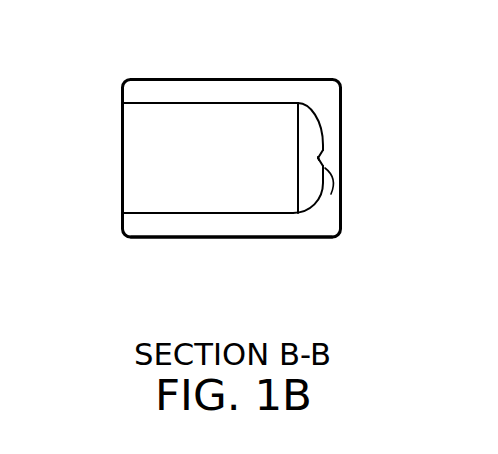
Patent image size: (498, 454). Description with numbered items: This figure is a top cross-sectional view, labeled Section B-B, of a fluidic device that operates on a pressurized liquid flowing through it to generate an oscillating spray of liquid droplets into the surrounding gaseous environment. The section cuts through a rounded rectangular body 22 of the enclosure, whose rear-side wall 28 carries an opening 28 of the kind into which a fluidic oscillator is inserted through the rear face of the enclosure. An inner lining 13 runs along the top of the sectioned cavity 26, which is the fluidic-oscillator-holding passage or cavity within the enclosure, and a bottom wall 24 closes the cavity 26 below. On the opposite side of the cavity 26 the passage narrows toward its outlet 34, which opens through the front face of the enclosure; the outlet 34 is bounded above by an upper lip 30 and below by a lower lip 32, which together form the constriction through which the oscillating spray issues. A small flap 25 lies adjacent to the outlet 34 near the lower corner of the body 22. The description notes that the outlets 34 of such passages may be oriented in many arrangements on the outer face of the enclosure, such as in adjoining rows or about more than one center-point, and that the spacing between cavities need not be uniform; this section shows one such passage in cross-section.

The housing 22 is at (336, 79).
The top layer 13 is at (144, 103).
The opening 28 is at (122, 176).
The inner cavity 26 is at (239, 193).
The upper pinch lip 30 is at (322, 154).
The outlet 34 is at (322, 158).
The lower pinch lip 32 is at (323, 166).
The flap 25 is at (332, 198).
The bottom wall 24 is at (268, 237).